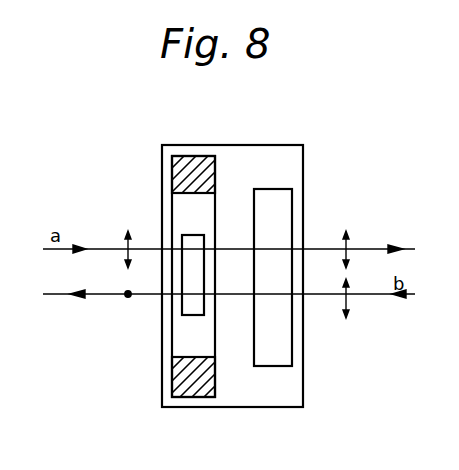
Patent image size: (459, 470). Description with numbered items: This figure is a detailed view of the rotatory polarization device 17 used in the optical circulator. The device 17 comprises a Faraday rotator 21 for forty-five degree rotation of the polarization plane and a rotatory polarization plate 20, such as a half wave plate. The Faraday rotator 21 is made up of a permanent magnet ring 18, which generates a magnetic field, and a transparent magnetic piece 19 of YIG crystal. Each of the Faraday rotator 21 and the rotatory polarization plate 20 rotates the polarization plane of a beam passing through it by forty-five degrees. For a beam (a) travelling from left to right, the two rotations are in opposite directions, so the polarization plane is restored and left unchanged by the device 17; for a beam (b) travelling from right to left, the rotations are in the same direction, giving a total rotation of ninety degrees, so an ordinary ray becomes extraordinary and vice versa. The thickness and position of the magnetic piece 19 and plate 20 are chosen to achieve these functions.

The rotatory polarization device 17 is at (273, 145).
The permanent magnet ring 18 is at (180, 170).
The transparent magnetic piece 19 is at (188, 312).
The rotatory polarization plate 20 is at (283, 205).
The Faraday rotator 21 is at (190, 388).